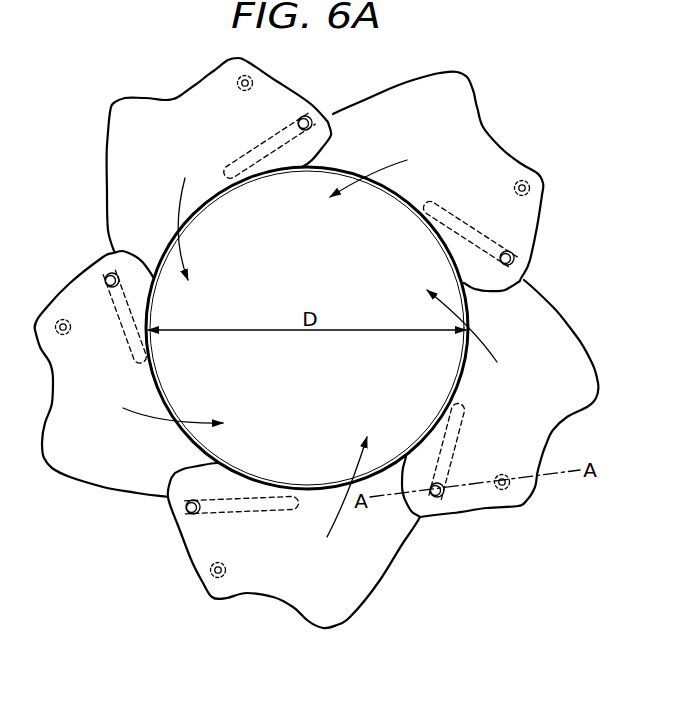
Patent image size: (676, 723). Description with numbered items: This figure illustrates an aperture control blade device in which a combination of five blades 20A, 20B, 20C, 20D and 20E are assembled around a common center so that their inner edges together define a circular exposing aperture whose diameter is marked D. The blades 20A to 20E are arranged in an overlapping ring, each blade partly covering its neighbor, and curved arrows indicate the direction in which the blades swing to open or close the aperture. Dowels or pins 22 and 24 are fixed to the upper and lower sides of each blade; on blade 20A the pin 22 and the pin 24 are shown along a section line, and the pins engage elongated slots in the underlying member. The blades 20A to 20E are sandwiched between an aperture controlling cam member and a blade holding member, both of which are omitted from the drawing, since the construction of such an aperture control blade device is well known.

The blade 20A is at (557, 330).
The blade 20B is at (477, 127).
The blade 20C is at (172, 110).
The blade 20D is at (88, 473).
The blade 20E is at (275, 592).
The dowel or pin 22 is at (435, 503).
The dowel or pin 24 is at (502, 500).